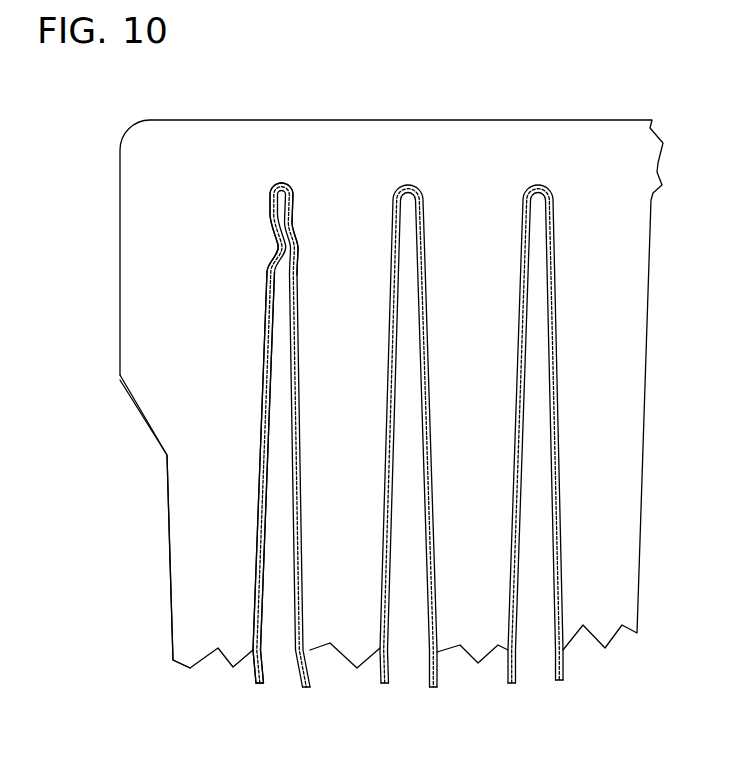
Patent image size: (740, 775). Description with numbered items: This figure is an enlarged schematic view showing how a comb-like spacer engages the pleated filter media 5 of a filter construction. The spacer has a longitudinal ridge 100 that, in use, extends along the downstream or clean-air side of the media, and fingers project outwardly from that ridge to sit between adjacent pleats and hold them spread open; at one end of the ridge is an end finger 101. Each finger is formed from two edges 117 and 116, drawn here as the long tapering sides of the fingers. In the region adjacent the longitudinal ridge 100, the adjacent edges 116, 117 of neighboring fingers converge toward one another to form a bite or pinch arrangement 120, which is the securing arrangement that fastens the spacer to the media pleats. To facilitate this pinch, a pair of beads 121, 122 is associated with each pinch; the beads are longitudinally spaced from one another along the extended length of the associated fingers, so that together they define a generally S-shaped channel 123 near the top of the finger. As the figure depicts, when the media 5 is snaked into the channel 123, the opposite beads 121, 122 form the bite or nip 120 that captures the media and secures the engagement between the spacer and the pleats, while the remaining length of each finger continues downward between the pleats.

The longitudinal ridge 100 is at (310, 142).
The end finger 101 is at (200, 532).
The edge 117 is at (173, 618).
The pinch arrangement 120 is at (249, 130).
The bead 122 is at (298, 218).
The S-shaped channel 123 is at (287, 235).
The bead 121 is at (268, 250).
The edge 116 is at (257, 592).
The media 5 is at (255, 674).